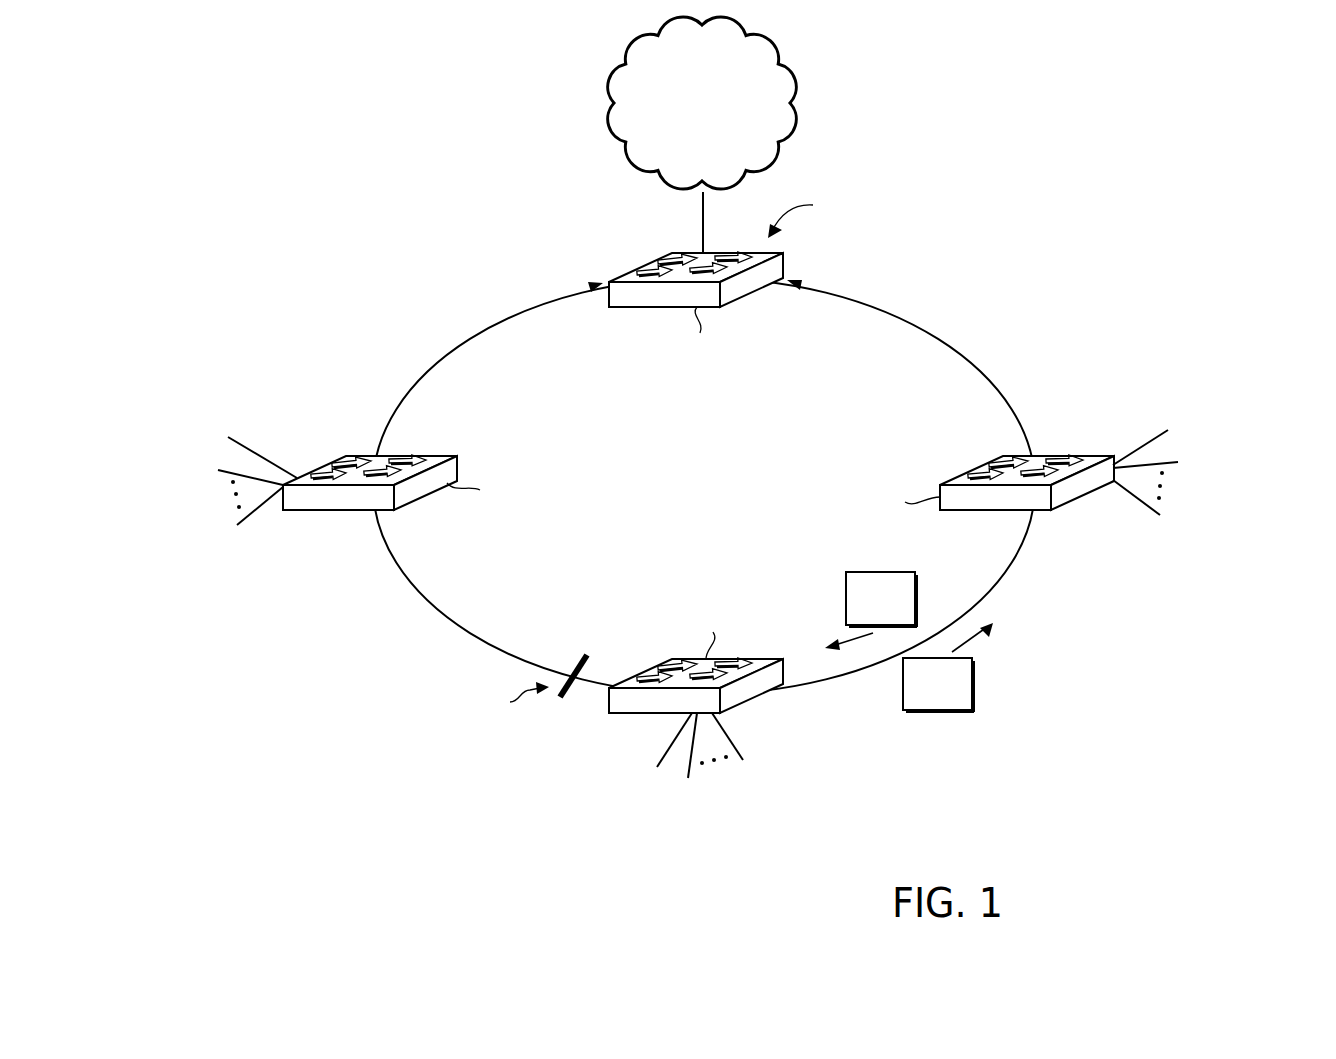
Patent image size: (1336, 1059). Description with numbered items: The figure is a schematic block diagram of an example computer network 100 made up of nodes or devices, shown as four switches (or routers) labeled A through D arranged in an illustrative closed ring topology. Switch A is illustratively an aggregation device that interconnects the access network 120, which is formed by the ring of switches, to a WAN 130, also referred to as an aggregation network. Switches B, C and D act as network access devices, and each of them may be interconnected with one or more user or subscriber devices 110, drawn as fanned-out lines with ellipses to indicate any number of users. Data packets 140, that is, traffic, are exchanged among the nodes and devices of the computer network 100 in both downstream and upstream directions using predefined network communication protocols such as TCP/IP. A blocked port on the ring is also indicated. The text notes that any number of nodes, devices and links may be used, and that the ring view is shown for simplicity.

The computer network 100 is at (319, 186).
The user devices 110 is at (689, 649).
The access network 120 is at (720, 490).
The WAN 130 is at (720, 134).
The data packets 140 is at (897, 614).